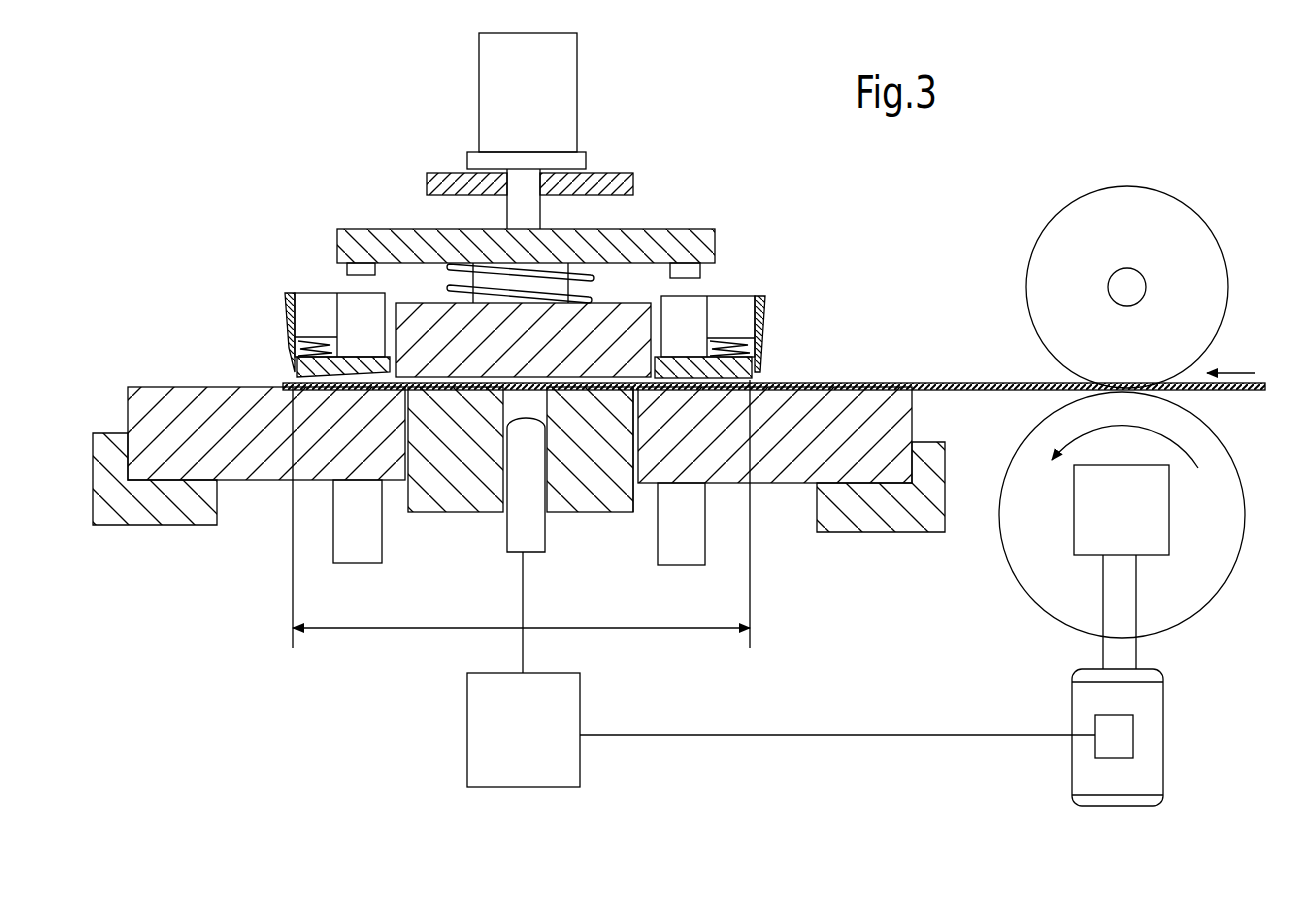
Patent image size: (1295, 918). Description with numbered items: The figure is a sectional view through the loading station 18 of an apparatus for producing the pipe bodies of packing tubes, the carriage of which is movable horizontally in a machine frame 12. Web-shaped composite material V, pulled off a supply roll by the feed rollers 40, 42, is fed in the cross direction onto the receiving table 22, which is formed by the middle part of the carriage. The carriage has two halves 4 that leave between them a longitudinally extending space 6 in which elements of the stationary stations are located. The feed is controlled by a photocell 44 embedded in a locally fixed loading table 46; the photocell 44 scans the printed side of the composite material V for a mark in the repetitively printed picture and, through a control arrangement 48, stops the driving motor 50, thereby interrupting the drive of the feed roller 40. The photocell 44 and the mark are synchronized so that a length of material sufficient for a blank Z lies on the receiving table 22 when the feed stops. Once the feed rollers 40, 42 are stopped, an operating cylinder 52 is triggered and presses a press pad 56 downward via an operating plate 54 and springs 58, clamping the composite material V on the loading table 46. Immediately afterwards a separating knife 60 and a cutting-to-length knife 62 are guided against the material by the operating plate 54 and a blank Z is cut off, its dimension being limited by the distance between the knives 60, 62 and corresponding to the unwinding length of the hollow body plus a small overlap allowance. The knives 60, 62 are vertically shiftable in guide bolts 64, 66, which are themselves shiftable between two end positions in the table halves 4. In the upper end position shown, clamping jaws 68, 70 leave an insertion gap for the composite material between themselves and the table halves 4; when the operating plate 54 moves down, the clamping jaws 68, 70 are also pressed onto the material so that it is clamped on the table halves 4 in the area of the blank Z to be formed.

The operating cylinder 52 is at (570, 96).
The machine frame 12 is at (612, 173).
The operating plate 54 is at (666, 229).
The loading station 18 is at (521, 277).
The springs 58 is at (455, 292).
The press pad 56 is at (645, 310).
The receiving table 22 is at (309, 299).
The cutting-to-length knife 62 is at (286, 330).
The separating knife 60 is at (766, 318).
The clamping jaw 70 is at (290, 372).
The clamping jaw 68 is at (757, 372).
The web-shaped composite material V is at (962, 384).
The carriage halves 4 is at (250, 483).
The loading table 46 is at (437, 513).
The space 6 is at (633, 478).
The photocell 44 is at (536, 548).
The guide bolt 66 is at (342, 553).
The guide bolt 64 is at (697, 565).
The blank Z is at (521, 514).
The control arrangement 48 is at (572, 700).
The feed roller 42 is at (1124, 188).
The feed roller 40 is at (1032, 605).
The driving motor 50 is at (1078, 773).